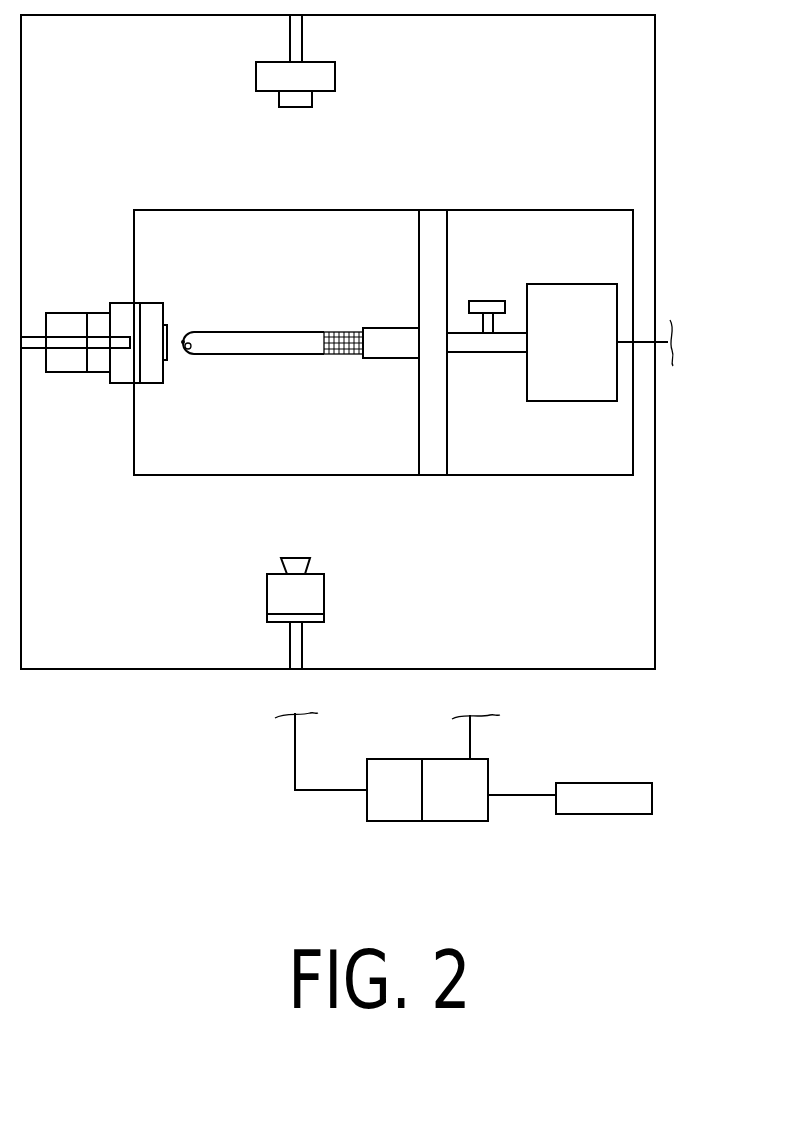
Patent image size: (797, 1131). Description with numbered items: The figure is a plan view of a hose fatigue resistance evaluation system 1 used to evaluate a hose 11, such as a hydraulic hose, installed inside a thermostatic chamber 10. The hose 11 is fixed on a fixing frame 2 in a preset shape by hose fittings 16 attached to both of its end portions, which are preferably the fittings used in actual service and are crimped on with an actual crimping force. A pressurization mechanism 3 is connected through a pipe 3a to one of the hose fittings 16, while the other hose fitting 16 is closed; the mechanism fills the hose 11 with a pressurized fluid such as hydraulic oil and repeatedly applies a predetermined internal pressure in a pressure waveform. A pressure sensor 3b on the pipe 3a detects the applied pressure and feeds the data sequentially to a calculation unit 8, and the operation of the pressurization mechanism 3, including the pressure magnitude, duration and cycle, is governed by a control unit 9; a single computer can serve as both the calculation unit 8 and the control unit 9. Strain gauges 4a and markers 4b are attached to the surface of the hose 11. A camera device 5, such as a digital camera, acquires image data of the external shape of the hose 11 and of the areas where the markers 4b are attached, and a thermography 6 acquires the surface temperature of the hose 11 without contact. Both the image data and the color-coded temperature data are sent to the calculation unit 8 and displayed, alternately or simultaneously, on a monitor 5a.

The hose fatigue resistance evaluation system 1 is at (668, 128).
The fixing frame 2 is at (440, 447).
The pressurization mechanism 3 is at (568, 285).
The pipe 3a is at (492, 345).
The pressure sensor 3b is at (492, 305).
The strain gauge 4a is at (183, 340).
The marker 4b is at (195, 348).
The camera device 5 is at (66, 372).
The monitor 5a is at (603, 790).
The thermography 6 is at (330, 86).
The calculation unit 8 is at (392, 822).
The control unit 9 is at (465, 820).
The thermostatic chamber 10 is at (84, 670).
The hose 11 is at (258, 330).
The hose fitting 16 is at (400, 336).